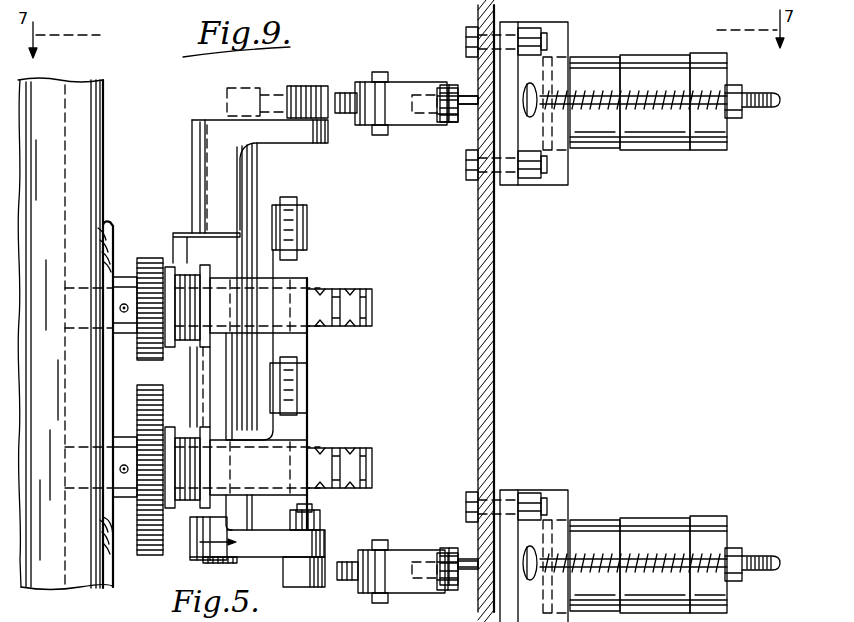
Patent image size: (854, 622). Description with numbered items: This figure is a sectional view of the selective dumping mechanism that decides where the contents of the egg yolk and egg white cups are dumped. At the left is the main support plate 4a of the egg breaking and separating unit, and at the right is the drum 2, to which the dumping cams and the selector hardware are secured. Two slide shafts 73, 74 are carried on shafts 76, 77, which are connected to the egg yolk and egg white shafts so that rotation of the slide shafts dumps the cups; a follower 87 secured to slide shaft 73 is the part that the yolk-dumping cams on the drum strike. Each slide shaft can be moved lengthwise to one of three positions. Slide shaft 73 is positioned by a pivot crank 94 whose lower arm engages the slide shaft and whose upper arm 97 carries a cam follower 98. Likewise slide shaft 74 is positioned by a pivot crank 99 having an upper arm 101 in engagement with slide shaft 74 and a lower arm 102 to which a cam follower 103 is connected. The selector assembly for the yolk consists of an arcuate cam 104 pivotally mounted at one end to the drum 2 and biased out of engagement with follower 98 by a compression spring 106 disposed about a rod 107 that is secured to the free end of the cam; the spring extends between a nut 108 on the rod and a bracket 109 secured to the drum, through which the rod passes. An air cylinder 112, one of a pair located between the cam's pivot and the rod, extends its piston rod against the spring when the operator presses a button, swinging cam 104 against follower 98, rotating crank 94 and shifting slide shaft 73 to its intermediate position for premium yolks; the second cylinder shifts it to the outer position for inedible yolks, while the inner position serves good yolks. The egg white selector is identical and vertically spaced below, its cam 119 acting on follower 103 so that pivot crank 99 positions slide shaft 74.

The drum 2 is at (496, 323).
The main support plate 4a is at (102, 121).
The slide shaft 73 is at (270, 334).
The slide shaft 74 is at (246, 482).
The shaft 76 is at (373, 306).
The shaft 77 is at (373, 462).
The follower 87 is at (292, 200).
The pivot crank 94 is at (192, 178).
The upper arm 97 is at (315, 145).
The cam follower 98 is at (312, 93).
The pivot crank 99 is at (190, 372).
The upper arm 101 is at (192, 555).
The lower arm 102 is at (272, 548).
The cam follower 103 is at (313, 567).
The arcuate cam 104 is at (418, 92).
The compression spring 106 is at (650, 95).
The rod 107 is at (760, 94).
The nut 108 is at (740, 118).
The bracket 109 is at (510, 23).
The air cylinder 112 is at (655, 143).
The cam 119 is at (357, 578).